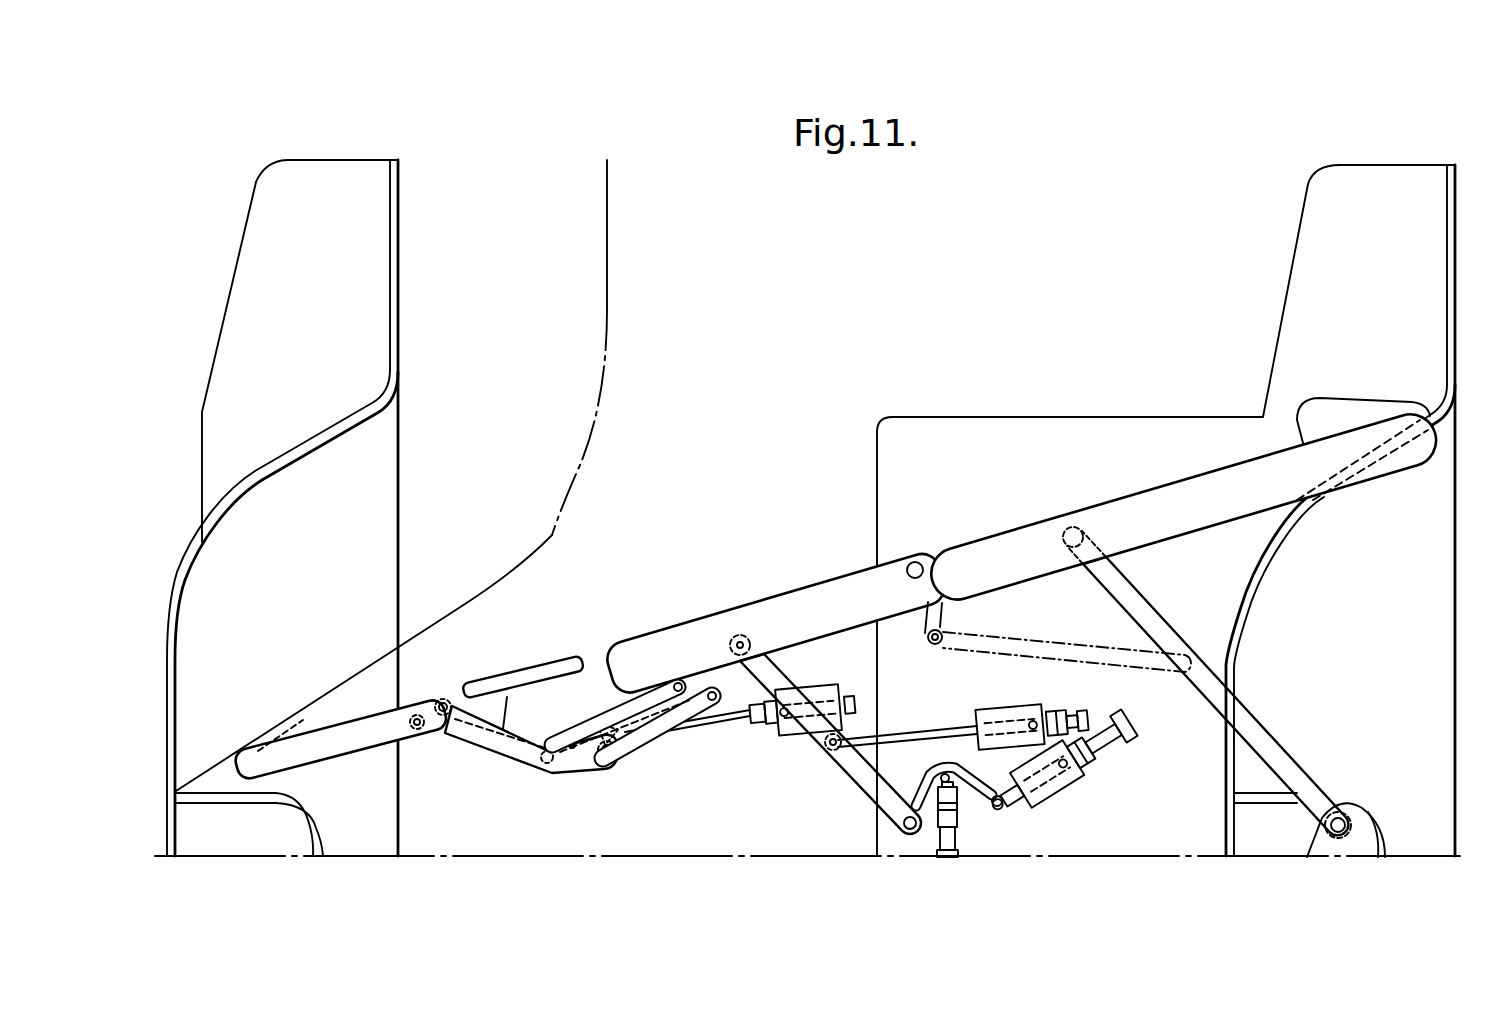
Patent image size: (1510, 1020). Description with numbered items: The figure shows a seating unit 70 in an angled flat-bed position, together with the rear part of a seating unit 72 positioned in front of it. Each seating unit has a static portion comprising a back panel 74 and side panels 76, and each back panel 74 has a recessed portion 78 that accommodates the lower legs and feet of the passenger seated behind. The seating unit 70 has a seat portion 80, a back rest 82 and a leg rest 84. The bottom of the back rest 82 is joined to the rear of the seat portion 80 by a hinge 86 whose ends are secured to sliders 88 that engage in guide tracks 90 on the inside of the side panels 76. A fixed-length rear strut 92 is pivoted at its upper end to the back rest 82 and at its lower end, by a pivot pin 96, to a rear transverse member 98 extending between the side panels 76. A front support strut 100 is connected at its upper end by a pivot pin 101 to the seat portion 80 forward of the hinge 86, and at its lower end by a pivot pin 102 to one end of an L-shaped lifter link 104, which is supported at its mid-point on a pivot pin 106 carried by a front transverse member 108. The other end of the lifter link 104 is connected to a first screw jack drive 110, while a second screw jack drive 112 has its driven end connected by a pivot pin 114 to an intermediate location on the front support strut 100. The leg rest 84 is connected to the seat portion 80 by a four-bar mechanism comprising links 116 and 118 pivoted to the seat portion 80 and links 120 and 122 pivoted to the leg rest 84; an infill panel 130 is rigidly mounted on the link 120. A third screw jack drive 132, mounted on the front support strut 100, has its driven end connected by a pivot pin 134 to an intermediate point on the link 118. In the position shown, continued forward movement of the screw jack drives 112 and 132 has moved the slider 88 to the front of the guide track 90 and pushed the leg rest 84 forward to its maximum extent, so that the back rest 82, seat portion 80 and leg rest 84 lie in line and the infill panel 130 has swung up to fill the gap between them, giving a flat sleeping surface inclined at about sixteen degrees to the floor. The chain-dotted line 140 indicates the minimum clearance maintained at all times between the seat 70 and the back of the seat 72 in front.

The seating unit 70 is at (1465, 222).
The seating unit 72 is at (352, 148).
The back panel 74 is at (400, 304).
The side panel 76 is at (243, 268).
The recessed portion 78 is at (306, 461).
The seat portion 80 is at (680, 630).
The back rest 82 is at (1171, 500).
The leg rest 84 is at (320, 737).
The hinge 86 is at (915, 562).
The slider 88 is at (942, 632).
The guide track 90 is at (1050, 637).
The rear strut 92 is at (1267, 747).
The pivot pin 96 is at (1343, 818).
The rear transverse member 98 is at (1343, 845).
The front support strut 100 is at (853, 770).
The pivot pin 101 is at (740, 634).
The pivot pin 102 is at (900, 830).
The lifter link 104 is at (917, 788).
The pivot pin 106 is at (968, 785).
The front transverse member 108 is at (944, 840).
The first screw jack drive 110 is at (1063, 778).
The second screw jack drive 112 is at (1006, 722).
The pivot pin 114 is at (826, 742).
The link 116 is at (640, 760).
The link 118 is at (650, 697).
The link 120 is at (502, 762).
The link 122 is at (433, 728).
The infill panel 130 is at (488, 686).
The third screw jack drive 132 is at (818, 700).
The pivot pin 134 is at (600, 757).
The chain-dotted line 140 is at (612, 183).